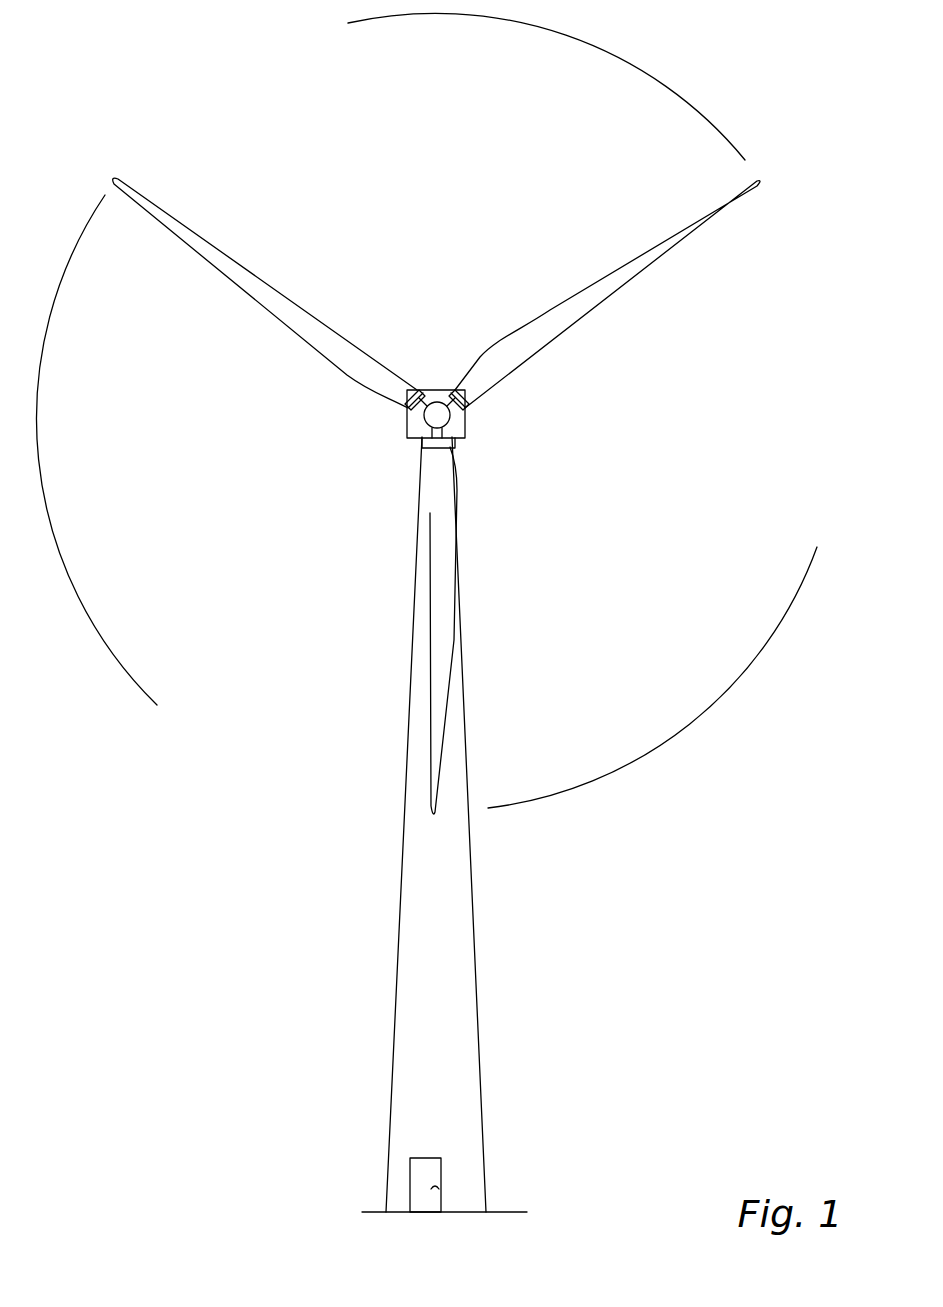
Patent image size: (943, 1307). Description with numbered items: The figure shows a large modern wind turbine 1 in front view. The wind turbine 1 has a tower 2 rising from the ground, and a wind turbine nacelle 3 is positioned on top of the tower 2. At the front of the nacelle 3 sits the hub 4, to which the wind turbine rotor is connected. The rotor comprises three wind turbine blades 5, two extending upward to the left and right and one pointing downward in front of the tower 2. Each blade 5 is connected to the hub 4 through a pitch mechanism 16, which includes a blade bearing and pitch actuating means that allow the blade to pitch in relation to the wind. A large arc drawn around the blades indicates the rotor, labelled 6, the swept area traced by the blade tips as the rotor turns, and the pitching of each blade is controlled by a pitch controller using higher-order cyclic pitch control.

The wind turbine 1 is at (381, 998).
The tower 2 is at (460, 927).
The wind turbine nacelle 3 is at (465, 436).
The hub 4 is at (407, 432).
The wind turbine blades 5 is at (442, 740).
The rotor 6 is at (140, 737).
The pitch mechanisms 16 is at (465, 410).